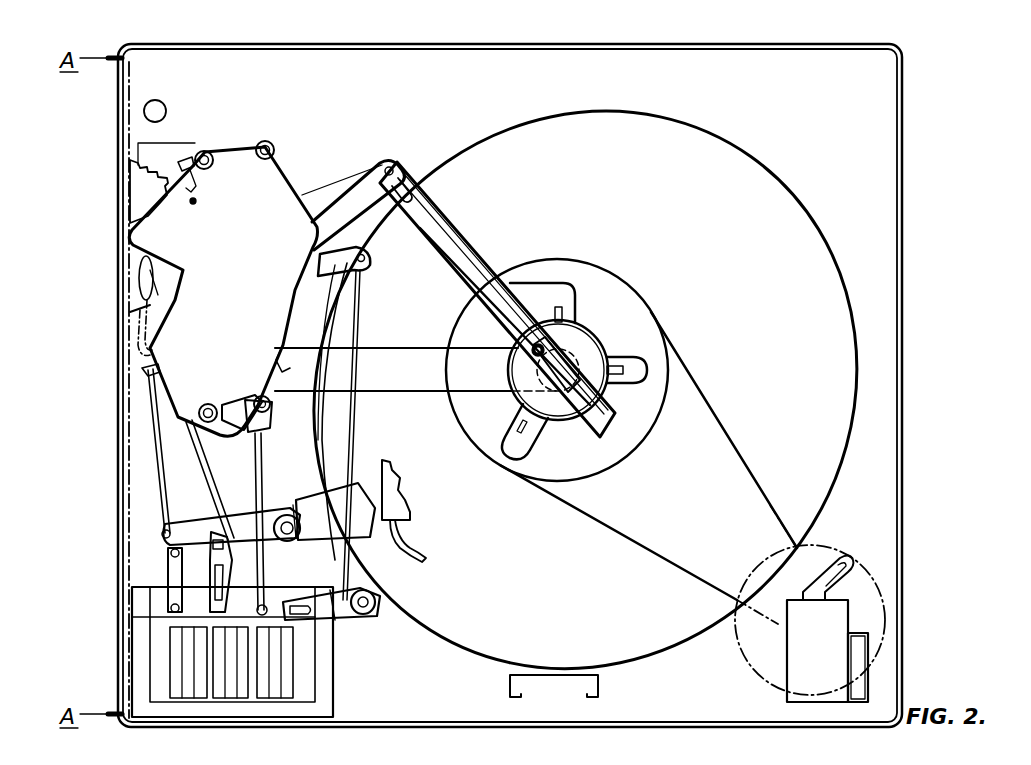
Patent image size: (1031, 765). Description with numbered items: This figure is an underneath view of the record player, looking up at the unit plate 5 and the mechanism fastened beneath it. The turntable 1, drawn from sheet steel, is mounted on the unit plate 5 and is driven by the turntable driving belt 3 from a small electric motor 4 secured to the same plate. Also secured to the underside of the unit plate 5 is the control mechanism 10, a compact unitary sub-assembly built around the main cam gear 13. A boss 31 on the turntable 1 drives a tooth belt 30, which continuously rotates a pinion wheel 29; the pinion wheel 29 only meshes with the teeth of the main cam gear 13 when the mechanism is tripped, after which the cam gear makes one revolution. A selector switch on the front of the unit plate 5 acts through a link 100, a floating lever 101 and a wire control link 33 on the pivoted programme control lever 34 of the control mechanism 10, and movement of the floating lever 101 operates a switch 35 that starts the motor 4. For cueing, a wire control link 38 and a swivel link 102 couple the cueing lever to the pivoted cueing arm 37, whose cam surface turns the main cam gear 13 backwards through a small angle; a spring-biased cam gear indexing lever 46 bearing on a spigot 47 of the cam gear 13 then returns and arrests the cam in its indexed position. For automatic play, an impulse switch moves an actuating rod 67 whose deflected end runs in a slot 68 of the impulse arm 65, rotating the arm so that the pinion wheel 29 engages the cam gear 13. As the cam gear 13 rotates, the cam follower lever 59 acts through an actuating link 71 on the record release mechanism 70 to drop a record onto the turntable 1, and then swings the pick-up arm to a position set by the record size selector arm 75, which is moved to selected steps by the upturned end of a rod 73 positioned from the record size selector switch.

The turntable 1 is at (780, 214).
The turntable driving belt 3 is at (700, 372).
The electric motor 4 is at (872, 600).
The unit plate 5 is at (880, 118).
The control mechanism 10 is at (288, 173).
The main cam gear 13 is at (140, 273).
The pinion wheel 29 is at (270, 400).
The tooth belt 30 is at (366, 392).
The boss 31 is at (592, 354).
The wire control link 33 is at (155, 478).
The programme control lever 34 is at (148, 312).
The switch 35 is at (404, 497).
The cueing arm 37 is at (366, 252).
The wire control link 38 is at (358, 322).
The cam gear indexing lever 46 is at (307, 292).
The spigot 47 is at (286, 345).
The cam follower lever 59 is at (357, 188).
The impulse arm 65 is at (262, 430).
The actuating rod 67 is at (262, 568).
The slot 68 is at (244, 402).
The record release mechanism 70 is at (570, 340).
The actuating link 71 is at (456, 230).
The rod 73 is at (203, 440).
The record size selector arm 75 is at (145, 193).
The link 100 is at (170, 597).
The floating lever 101 is at (165, 545).
The swivel link 102 is at (355, 620).